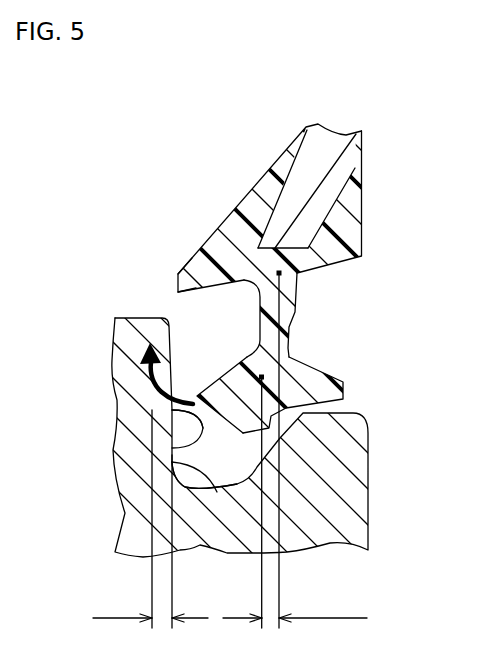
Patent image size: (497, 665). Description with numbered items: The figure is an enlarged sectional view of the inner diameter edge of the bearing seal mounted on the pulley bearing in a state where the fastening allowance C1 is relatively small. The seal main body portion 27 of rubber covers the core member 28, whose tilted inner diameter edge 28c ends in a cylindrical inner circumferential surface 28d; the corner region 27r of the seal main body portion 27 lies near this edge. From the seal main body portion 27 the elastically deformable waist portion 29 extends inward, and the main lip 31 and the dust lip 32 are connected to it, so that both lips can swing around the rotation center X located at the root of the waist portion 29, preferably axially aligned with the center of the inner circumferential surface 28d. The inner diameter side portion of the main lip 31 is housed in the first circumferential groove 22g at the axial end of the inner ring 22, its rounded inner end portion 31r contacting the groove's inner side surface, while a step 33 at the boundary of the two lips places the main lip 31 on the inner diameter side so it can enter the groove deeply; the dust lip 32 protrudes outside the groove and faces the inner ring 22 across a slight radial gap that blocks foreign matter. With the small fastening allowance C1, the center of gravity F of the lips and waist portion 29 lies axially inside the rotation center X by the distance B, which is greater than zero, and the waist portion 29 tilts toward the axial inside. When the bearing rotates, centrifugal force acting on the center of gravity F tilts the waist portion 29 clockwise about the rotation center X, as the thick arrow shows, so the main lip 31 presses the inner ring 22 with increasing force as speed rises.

The inner ring 22 is at (137, 512).
The first circumferential groove 22g is at (172, 462).
The seal main body portion 27 is at (362, 148).
The corner portion of ring member 27r is at (184, 276).
The core member 28 is at (327, 141).
The inner diameter edge 28c is at (292, 202).
The inner circumferential surface 28d is at (270, 250).
The waist portion 29 is at (292, 328).
The main lip 31 is at (198, 445).
The axis O direction inner end portion 31r is at (171, 412).
The dust lip 32 is at (341, 402).
The step 33 is at (262, 426).
The rotation center X is at (299, 274).
The center of gravity F is at (289, 357).
The fastening allowance C1 is at (150, 519).
The axis O direction distance B is at (295, 605).